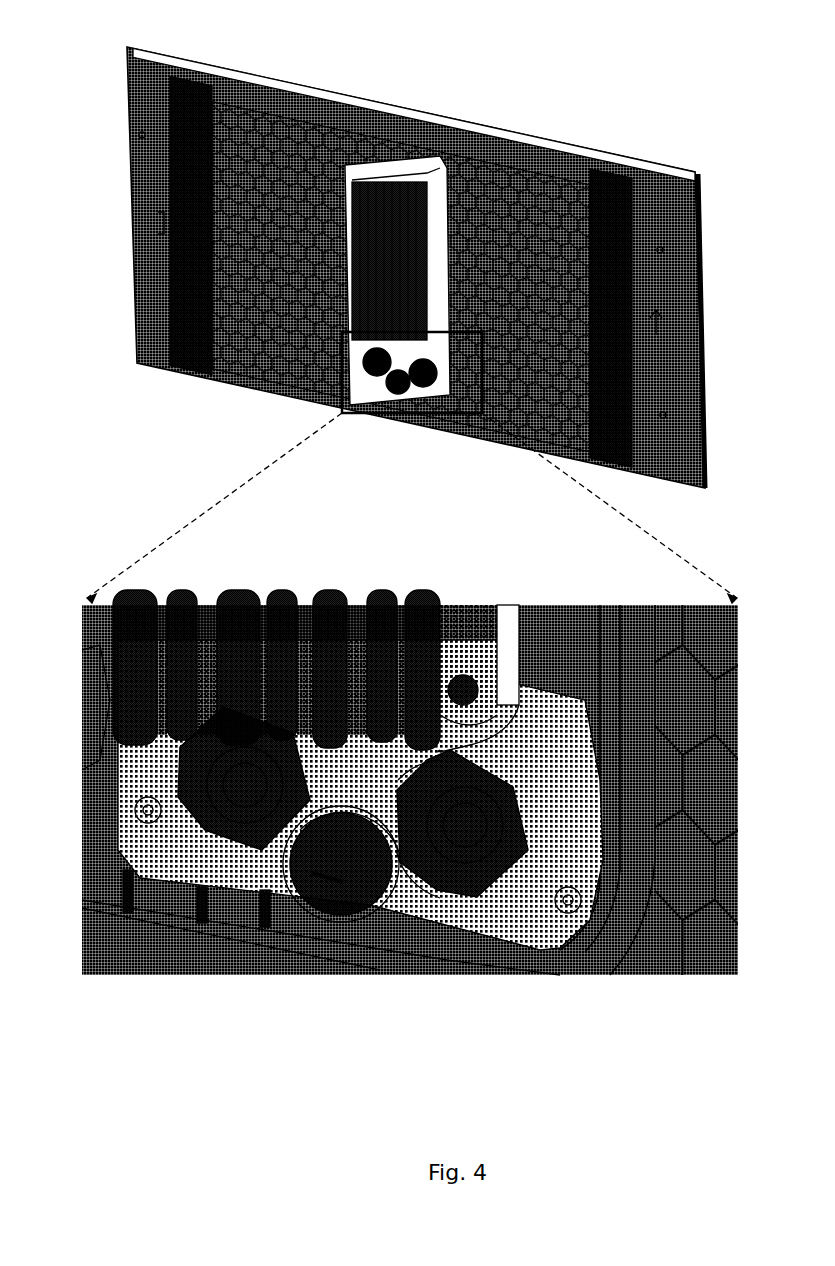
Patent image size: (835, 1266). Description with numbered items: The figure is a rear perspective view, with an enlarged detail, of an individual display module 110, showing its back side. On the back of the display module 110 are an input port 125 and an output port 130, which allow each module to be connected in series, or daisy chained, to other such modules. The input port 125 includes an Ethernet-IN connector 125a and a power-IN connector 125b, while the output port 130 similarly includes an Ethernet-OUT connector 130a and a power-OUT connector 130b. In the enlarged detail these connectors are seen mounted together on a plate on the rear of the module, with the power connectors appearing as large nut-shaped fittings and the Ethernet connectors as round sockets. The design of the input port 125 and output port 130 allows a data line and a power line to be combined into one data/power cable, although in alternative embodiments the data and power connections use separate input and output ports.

The display module 110 is at (108, 72).
The input port 125 is at (492, 908).
The Ethernet-IN connector 125a is at (433, 887).
The power-IN connector 125b is at (513, 795).
The output port 130 is at (281, 878).
The Ethernet-OUT connector 130a is at (213, 800).
The power-OUT connector 130b is at (305, 768).